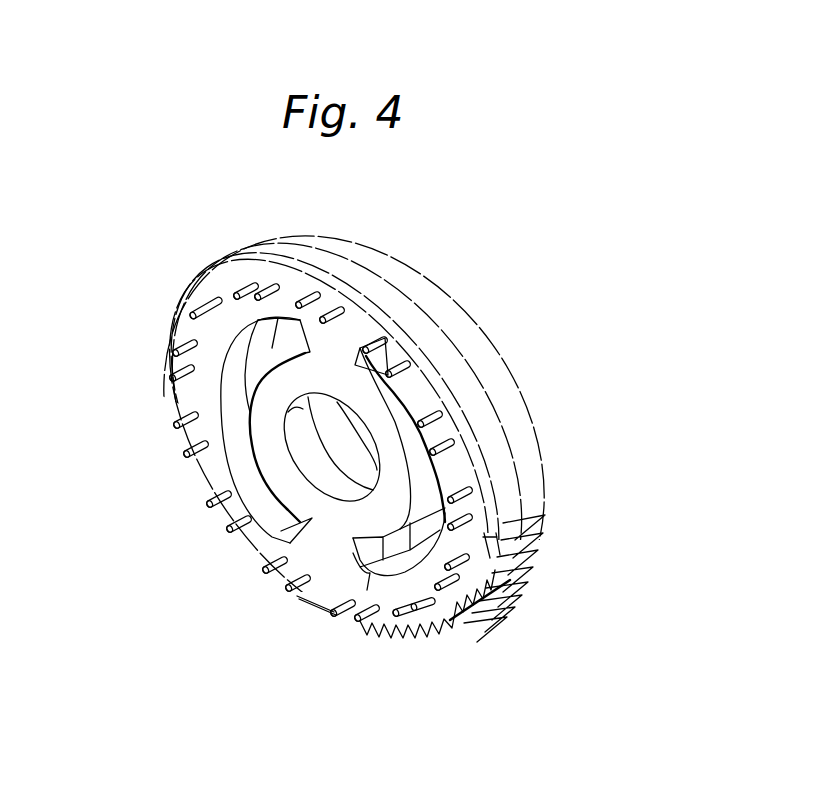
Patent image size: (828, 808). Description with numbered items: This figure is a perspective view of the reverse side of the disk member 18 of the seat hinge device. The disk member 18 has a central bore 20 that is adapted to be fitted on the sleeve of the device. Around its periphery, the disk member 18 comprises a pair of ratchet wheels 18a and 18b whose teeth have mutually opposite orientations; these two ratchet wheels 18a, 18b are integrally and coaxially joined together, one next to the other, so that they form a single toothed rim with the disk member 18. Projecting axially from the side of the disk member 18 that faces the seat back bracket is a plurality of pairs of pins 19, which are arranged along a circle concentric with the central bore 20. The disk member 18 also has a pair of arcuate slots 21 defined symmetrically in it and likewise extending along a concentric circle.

The disk member 18 is at (494, 298).
The ratchet wheel 18a is at (537, 553).
The ratchet wheel 18b is at (497, 603).
The pins 19 is at (244, 303).
The central bore 20 is at (297, 415).
The arcuate slots 21 is at (265, 557).